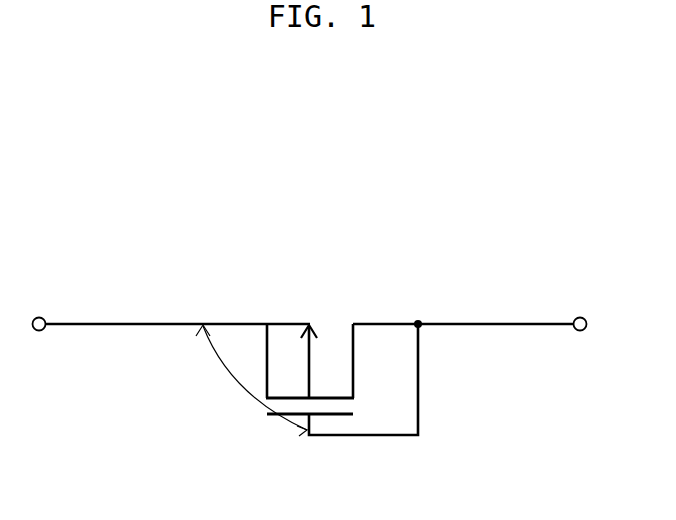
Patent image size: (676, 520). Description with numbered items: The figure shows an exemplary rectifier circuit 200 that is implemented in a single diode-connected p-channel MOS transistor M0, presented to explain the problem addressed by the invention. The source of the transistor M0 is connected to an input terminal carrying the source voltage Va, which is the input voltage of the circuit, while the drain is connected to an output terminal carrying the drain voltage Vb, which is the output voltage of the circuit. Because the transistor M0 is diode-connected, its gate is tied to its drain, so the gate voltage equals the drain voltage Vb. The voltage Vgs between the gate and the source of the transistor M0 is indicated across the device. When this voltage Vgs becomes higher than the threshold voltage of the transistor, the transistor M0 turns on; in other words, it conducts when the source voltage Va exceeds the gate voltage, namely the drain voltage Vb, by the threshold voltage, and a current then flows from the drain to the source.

The rectifier circuit 200 is at (250, 143).
The diode-connected pMOS transistor M0 is at (328, 324).
The source voltage Va is at (36, 327).
The drain voltage Vb is at (595, 327).
The voltage between the gate and the source Vgs is at (244, 380).